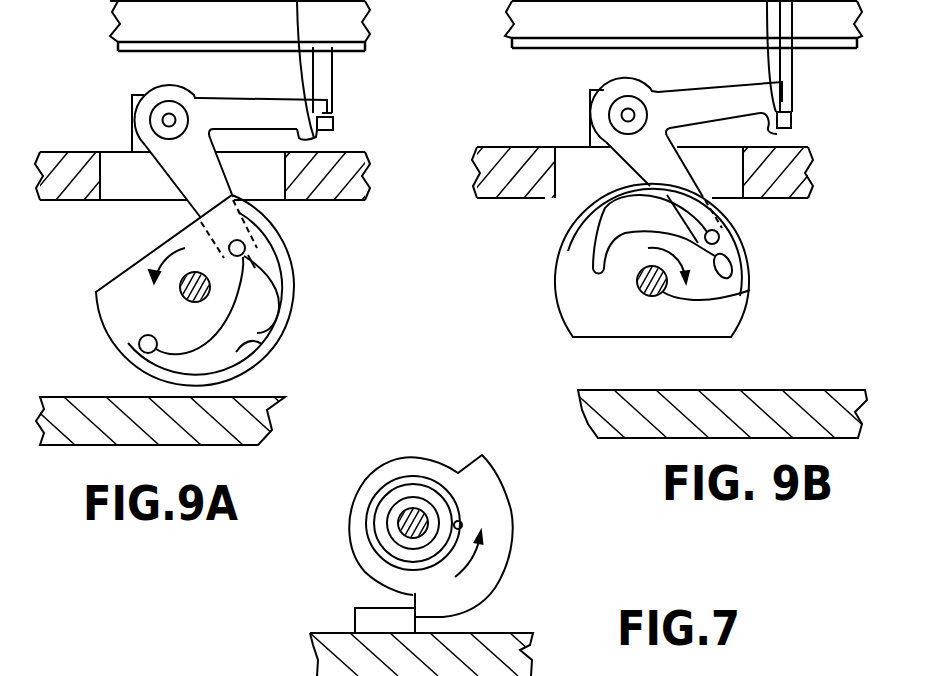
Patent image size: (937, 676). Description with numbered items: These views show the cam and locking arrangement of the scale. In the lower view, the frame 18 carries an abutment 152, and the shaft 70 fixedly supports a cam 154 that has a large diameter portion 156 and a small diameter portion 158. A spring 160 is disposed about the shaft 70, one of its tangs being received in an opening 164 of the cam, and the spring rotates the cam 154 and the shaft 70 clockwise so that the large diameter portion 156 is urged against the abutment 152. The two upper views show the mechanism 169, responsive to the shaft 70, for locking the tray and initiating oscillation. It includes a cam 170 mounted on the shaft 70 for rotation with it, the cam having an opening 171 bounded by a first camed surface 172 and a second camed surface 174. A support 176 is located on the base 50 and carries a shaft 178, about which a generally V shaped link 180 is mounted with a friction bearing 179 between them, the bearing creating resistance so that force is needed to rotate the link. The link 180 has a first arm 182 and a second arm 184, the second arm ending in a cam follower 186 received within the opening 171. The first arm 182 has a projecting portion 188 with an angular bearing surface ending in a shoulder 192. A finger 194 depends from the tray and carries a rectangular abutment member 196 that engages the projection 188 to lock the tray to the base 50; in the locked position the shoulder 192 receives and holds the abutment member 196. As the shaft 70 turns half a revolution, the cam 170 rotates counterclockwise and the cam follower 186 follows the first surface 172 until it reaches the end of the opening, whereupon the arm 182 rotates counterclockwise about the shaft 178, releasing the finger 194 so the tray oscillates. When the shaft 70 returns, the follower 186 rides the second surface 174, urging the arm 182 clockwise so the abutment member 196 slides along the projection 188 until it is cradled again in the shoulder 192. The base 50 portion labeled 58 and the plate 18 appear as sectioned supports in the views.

In FIG. 9A, the frame 18 is at (268, 407).
In FIG. 9B, the frame 18 is at (735, 390).
In FIG. 7, the frame 18 is at (533, 640).
In FIG. 9A, the base 50 is at (54, 202).
In FIG. 9B, the base 50 is at (497, 187).
In FIG. 9A, the wall partition 58 is at (102, 184).
In FIG. 9B, the wall partition 58 is at (560, 198).
In FIG. 9B, the shaft 70 is at (750, 291).
In FIG. 7, the shaft 70 is at (400, 535).
In FIG. 7, the abutment 152 is at (350, 620).
In FIG. 7, the cam 154 is at (451, 522).
In FIG. 7, the large diameter portion 156 is at (483, 590).
In FIG. 7, the small diameter portion 158 is at (347, 503).
In FIG. 7, the spring 160 is at (414, 472).
In FIG. 7, the opening 164 is at (462, 522).
In FIG. 9A, the mechanism for locking and initiating oscillation 169 is at (354, 268).
In FIG. 9A, the cam 170 is at (293, 307).
In FIG. 9B, the cam 170 is at (748, 318).
In FIG. 9A, the opening 171 is at (253, 328).
In FIG. 9A, the first camed surface 172 is at (138, 360).
In FIG. 9A, the second camed surface 174 is at (273, 350).
In FIG. 9A, the support 176 is at (130, 107).
In FIG. 9B, the support 176 is at (588, 105).
In FIG. 9A, the shaft 178 is at (152, 120).
In FIG. 9B, the shaft 178 is at (617, 117).
In FIG. 9A, the friction bearing 179 is at (150, 87).
In FIG. 9B, the friction bearing 179 is at (617, 82).
In FIG. 9A, the generally V shaped link 180 is at (247, 177).
In FIG. 9B, the generally V shaped link 180 is at (710, 174).
In FIG. 9A, the first arm 182 is at (278, 98).
In FIG. 9B, the first arm 182 is at (732, 82).
In FIG. 9A, the second arm 184 is at (180, 182).
In FIG. 9B, the second arm 184 is at (612, 178).
In FIG. 9A, the cam follower 186 is at (248, 258).
In FIG. 9B, the cam follower 186 is at (720, 265).
In FIG. 9A, the projecting portion 188 is at (318, 138).
In FIG. 9B, the projecting portion 188 is at (788, 135).
In FIG. 9A, the shoulder 192 is at (335, 110).
In FIG. 9A, the finger 194 is at (335, 80).
In FIG. 9B, the finger 194 is at (793, 63).
In FIG. 9A, the rectangular abutment member 196 is at (334, 126).
In FIG. 9B, the rectangular abutment member 196 is at (793, 120).